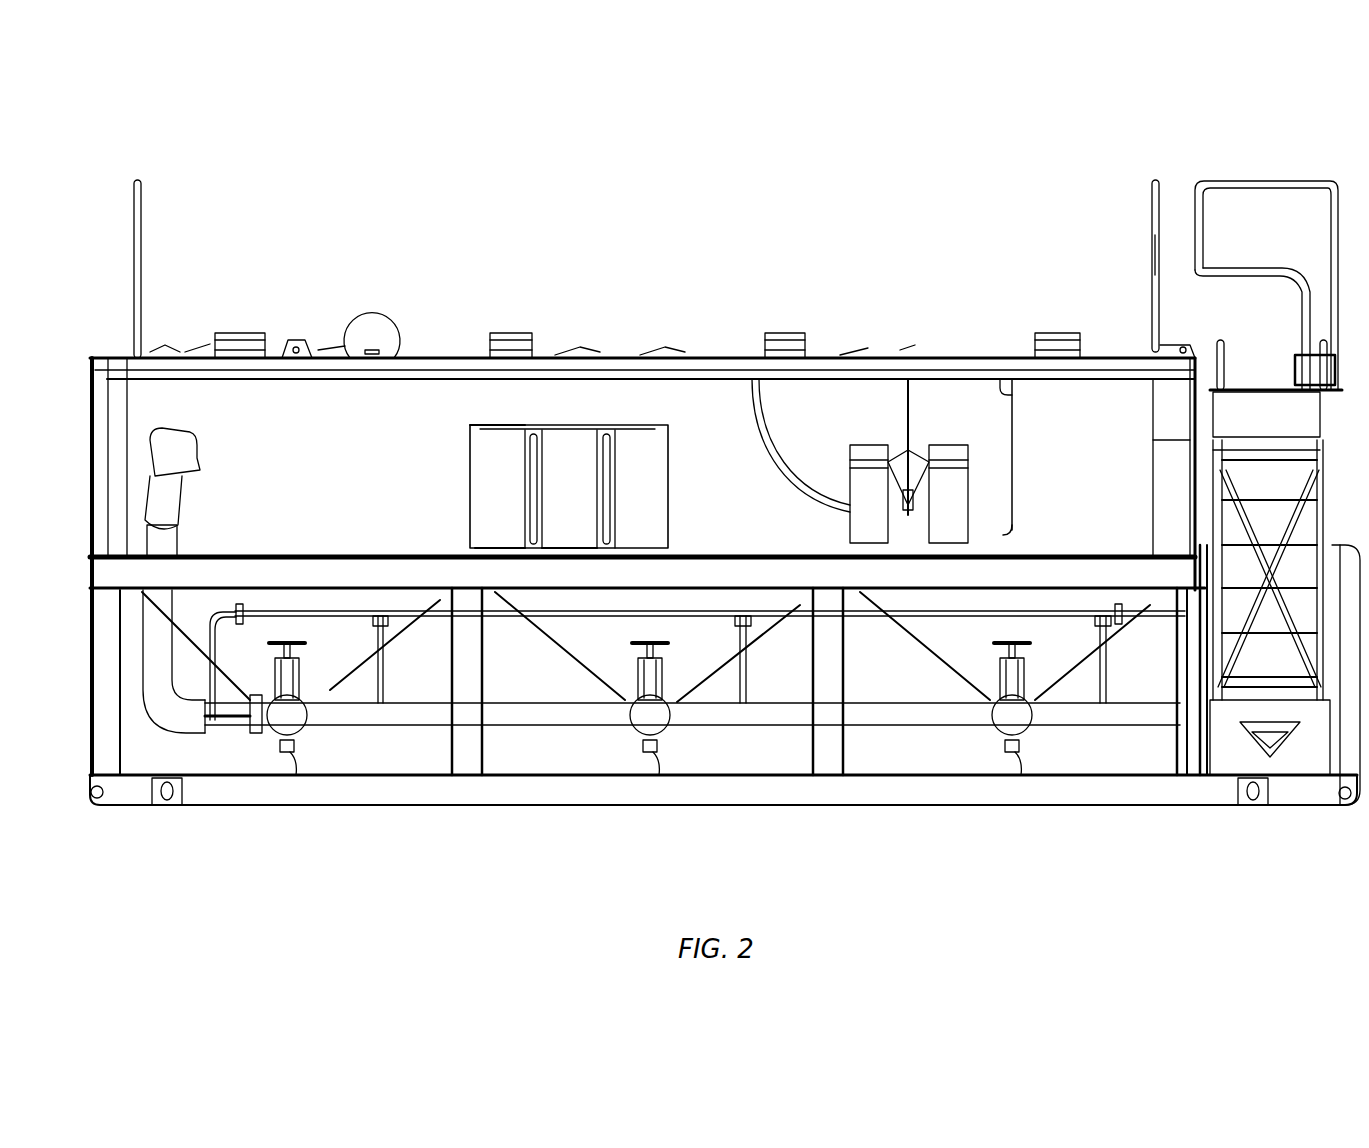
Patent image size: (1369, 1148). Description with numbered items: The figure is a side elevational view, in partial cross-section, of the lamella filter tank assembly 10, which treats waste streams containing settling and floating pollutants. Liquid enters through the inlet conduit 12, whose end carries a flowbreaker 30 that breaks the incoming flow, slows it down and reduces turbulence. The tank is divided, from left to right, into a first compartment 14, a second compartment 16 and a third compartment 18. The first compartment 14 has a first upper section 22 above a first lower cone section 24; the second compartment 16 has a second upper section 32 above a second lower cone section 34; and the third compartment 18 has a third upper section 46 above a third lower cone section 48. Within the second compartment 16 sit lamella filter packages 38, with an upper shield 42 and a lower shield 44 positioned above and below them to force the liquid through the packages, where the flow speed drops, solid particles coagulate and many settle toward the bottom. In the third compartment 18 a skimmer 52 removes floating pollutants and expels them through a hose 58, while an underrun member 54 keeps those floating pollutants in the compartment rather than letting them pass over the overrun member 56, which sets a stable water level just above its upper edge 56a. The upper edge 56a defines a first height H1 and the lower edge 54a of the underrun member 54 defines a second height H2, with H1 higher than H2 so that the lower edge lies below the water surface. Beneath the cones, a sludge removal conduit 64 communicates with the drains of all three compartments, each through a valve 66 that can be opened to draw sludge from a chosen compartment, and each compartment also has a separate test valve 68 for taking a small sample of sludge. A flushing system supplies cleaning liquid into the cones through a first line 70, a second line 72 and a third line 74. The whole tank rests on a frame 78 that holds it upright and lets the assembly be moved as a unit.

The lamella filter tank assembly 10 is at (1222, 130).
The inlet conduit 12 is at (150, 655).
The first compartment 14 is at (352, 427).
The second compartment 16 is at (727, 427).
The third compartment 18 is at (1060, 429).
The first upper section 22 is at (265, 395).
The first lower cone section 24 is at (190, 600).
The flowbreaker 30 is at (160, 450).
The second upper section 32 is at (593, 397).
The second lower cone section 34 is at (603, 663).
The lamella filter package 38 is at (500, 447).
The upper shield 42 is at (467, 397).
The lower shield 44 is at (470, 540).
The third upper section 46 is at (947, 397).
The third lower cone section 48 is at (967, 665).
The skimmer 52 is at (880, 432).
The underrun member 54 is at (1000, 395).
The lower edge of the underrun member 54a is at (1010, 525).
The overrun member 56 is at (1150, 470).
The upper edge of the overrun member 56a is at (1146, 445).
The hose 58 is at (770, 420).
The sludge removal conduit 64 is at (715, 717).
The valve 66 is at (300, 683).
The test valve 68 is at (290, 752).
The first line 70 is at (382, 685).
The second line 72 is at (745, 685).
The third line 74 is at (1075, 688).
The frame 78 is at (830, 757).
The first height H1 is at (1115, 802).
The second height H2 is at (1057, 802).